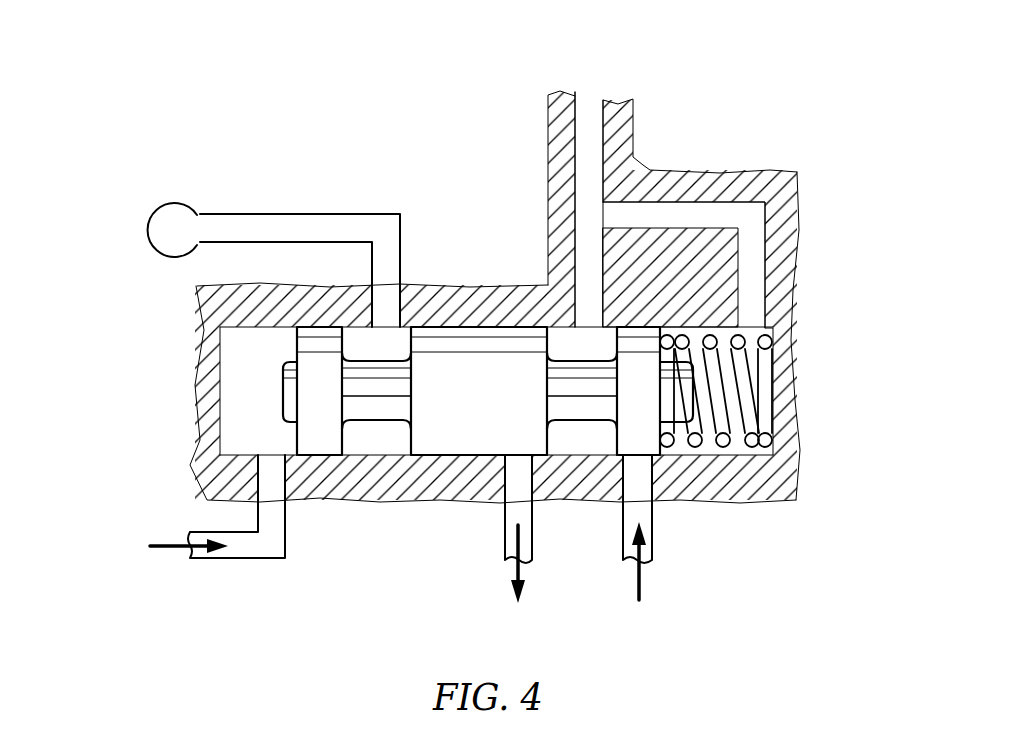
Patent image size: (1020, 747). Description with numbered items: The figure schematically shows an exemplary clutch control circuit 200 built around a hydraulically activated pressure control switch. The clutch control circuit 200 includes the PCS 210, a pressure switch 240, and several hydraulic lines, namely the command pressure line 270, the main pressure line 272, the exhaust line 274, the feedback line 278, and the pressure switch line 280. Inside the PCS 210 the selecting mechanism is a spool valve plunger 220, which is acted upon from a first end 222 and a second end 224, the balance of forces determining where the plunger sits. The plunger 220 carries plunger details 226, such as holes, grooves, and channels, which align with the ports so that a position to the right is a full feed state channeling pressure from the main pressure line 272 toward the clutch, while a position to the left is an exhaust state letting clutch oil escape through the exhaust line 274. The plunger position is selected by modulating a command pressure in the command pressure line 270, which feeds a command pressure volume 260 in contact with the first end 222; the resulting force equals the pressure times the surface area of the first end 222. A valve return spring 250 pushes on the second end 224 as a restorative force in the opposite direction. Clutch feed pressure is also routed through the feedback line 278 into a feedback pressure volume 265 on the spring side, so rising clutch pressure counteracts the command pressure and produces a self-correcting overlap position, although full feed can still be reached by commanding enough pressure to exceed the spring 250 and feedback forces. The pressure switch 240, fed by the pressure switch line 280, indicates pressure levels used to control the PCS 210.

The clutch control circuit 200 is at (443, 257).
The PCS 210 is at (459, 359).
The spool valve plunger 220 is at (452, 357).
The first end 222 is at (295, 388).
The second end 224 is at (663, 425).
The plunger details 226 is at (362, 352).
The pressure switch 240 is at (175, 218).
The valve return spring 250 is at (745, 385).
The command pressure volume 260 is at (235, 402).
The feedback pressure volume 265 is at (780, 391).
The command pressure line 270 is at (253, 545).
The main pressure line 272 is at (652, 520).
The exhaust line 274 is at (513, 513).
The feedback line 278 is at (752, 282).
The pressure switch line 280 is at (262, 213).